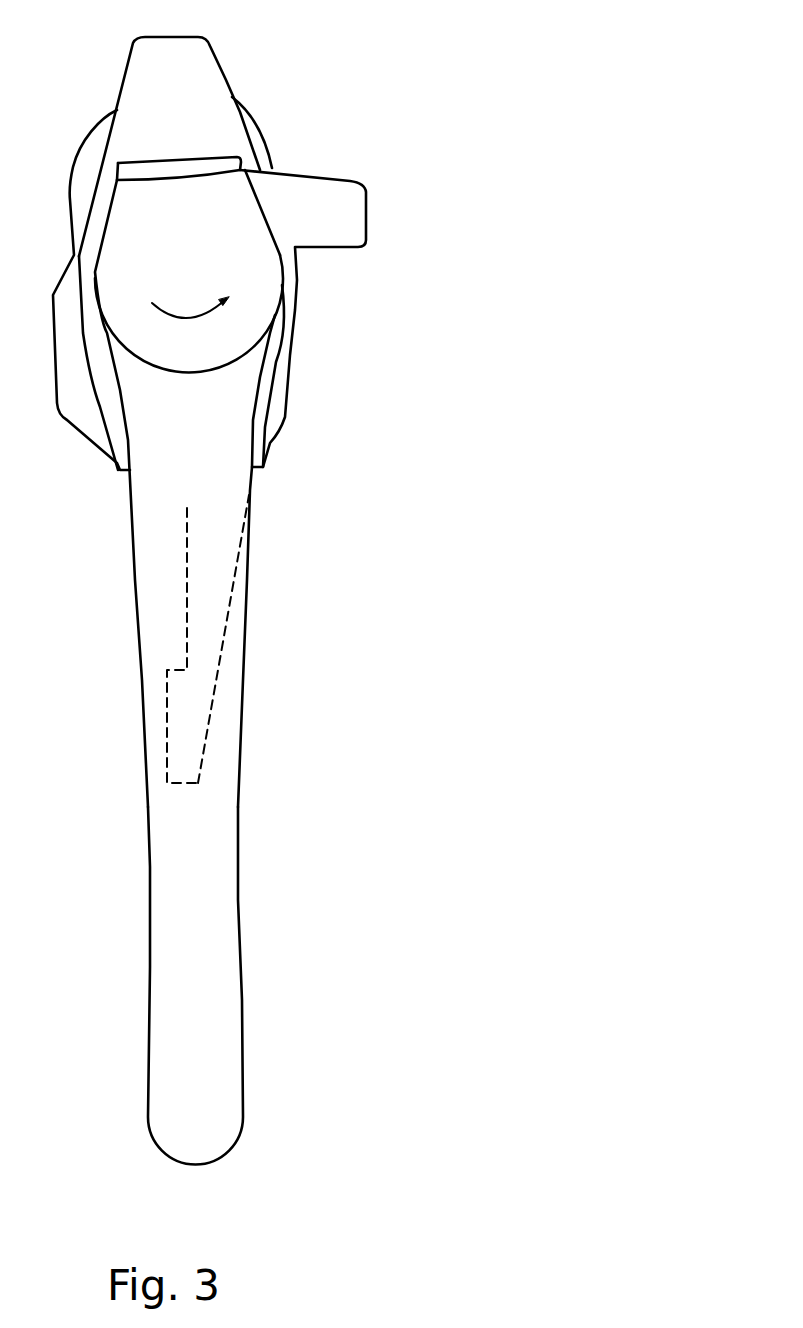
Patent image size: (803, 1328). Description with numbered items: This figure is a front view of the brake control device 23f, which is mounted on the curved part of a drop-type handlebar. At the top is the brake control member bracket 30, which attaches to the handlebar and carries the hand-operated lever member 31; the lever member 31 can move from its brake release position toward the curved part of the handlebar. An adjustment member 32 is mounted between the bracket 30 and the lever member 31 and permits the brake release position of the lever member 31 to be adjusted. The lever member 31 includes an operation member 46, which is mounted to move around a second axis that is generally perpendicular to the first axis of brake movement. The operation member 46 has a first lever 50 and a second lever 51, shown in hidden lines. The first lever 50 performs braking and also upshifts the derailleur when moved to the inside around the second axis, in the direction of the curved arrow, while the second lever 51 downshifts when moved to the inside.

The brake control member bracket 30 is at (192, 88).
The adjustment member 32 is at (220, 168).
The brake control device 23f is at (325, 537).
The lever member 31 is at (277, 582).
The operation member 46 is at (210, 881).
The first lever 50 is at (222, 763).
The second lever 51 is at (230, 667).